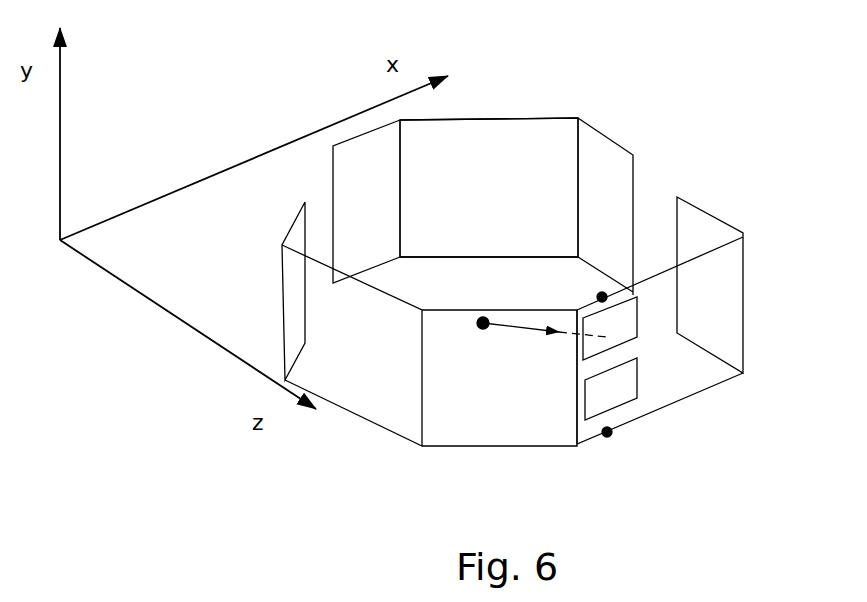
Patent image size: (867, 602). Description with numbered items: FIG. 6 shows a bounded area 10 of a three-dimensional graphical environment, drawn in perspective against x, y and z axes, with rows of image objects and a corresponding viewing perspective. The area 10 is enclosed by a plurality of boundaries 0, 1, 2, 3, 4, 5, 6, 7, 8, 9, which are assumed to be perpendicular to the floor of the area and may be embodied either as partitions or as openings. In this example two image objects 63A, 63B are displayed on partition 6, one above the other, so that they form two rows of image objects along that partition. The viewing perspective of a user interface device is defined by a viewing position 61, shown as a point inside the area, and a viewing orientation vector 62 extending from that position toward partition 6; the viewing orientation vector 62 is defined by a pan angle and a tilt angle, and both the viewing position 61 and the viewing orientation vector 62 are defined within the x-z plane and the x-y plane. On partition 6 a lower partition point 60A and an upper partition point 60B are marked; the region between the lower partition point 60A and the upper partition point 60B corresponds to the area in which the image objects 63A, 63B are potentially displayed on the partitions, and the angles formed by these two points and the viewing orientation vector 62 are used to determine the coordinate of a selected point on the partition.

The area 10 is at (537, 150).
The boundary 0 is at (489, 187).
The boundary 1 is at (366, 201).
The boundary 2 is at (319, 190).
The boundary 3 is at (293, 291).
The boundary 4 is at (352, 349).
The boundary 5 is at (499, 395).
The partition 6 is at (660, 340).
The boundary 7 is at (710, 285).
The boundary 8 is at (655, 200).
The boundary 9 is at (605, 206).
The viewing position 61 is at (477, 318).
The viewing orientation vector 62 is at (519, 329).
The lower partition point 60A is at (608, 440).
The upper partition point 60B is at (609, 295).
The image object 63A is at (589, 411).
The image object 63B is at (628, 339).